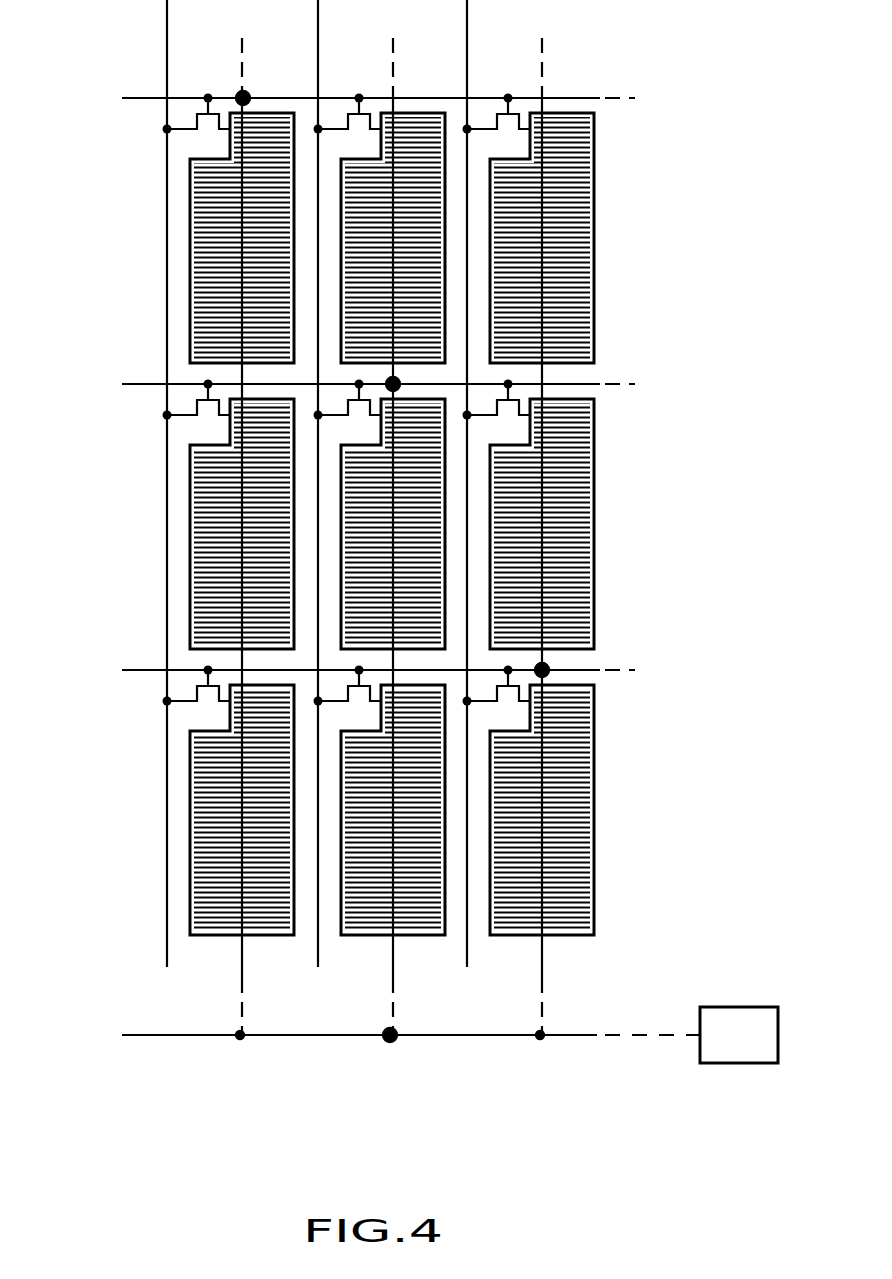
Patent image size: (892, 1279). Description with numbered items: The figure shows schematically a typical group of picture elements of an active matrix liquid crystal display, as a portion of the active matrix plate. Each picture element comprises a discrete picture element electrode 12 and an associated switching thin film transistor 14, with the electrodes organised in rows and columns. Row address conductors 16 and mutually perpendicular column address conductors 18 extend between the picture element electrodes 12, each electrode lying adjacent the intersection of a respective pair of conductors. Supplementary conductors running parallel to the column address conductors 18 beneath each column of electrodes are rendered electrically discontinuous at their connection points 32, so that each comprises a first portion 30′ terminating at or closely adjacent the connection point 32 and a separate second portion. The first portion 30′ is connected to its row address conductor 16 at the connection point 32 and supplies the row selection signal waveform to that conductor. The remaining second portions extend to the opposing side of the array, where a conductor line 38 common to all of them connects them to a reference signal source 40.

The picture element electrode 12 is at (575, 228).
The thin film transistor 14 is at (208, 123).
The row address conductor 16 is at (578, 98).
The column address conductor 18 is at (168, 36).
The first portion 30′ is at (245, 77).
The connection point 32 is at (250, 95).
The conductor line 38 is at (466, 1037).
The reference signal source 40 is at (739, 1035).